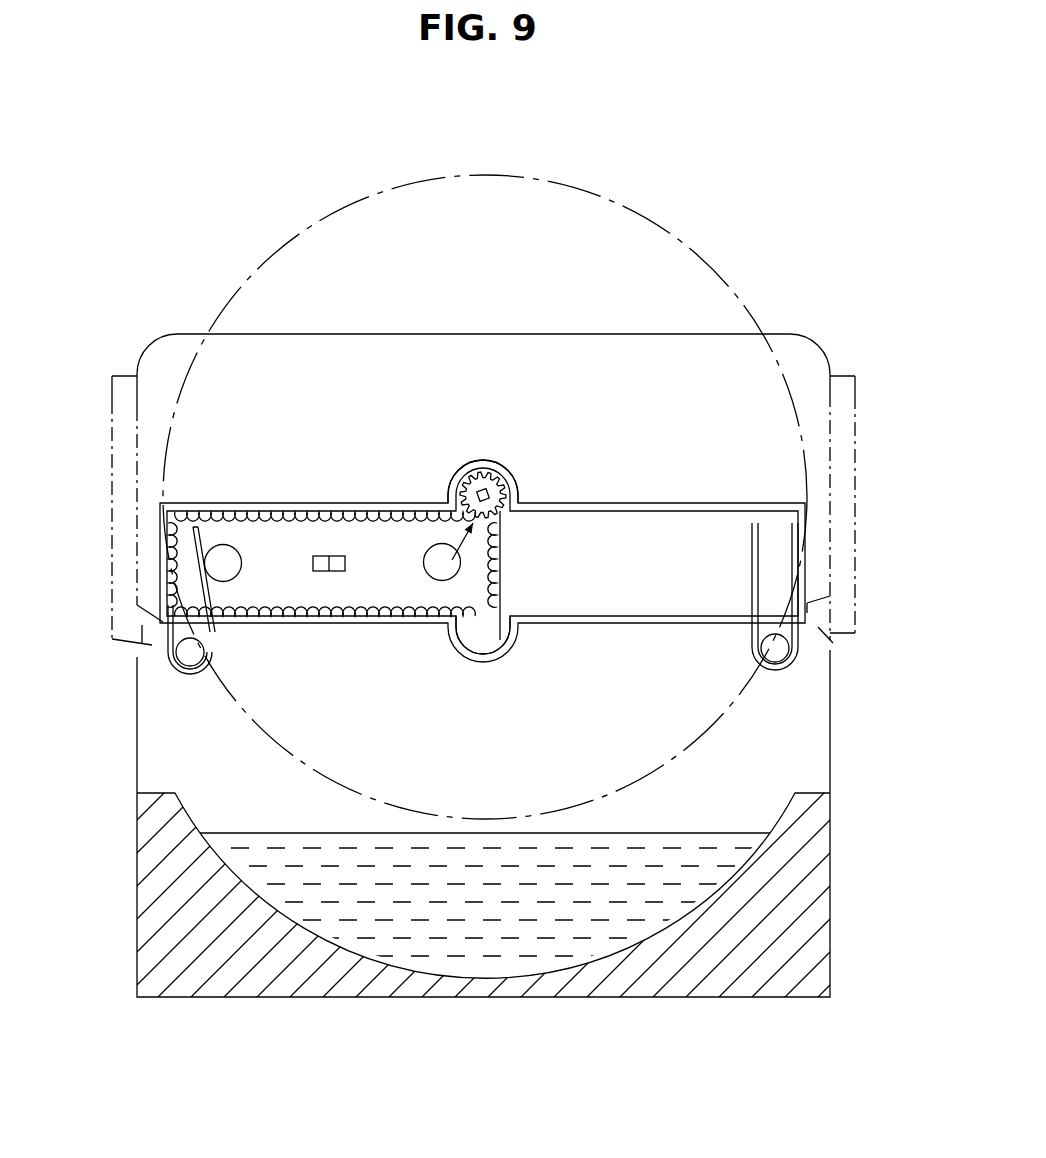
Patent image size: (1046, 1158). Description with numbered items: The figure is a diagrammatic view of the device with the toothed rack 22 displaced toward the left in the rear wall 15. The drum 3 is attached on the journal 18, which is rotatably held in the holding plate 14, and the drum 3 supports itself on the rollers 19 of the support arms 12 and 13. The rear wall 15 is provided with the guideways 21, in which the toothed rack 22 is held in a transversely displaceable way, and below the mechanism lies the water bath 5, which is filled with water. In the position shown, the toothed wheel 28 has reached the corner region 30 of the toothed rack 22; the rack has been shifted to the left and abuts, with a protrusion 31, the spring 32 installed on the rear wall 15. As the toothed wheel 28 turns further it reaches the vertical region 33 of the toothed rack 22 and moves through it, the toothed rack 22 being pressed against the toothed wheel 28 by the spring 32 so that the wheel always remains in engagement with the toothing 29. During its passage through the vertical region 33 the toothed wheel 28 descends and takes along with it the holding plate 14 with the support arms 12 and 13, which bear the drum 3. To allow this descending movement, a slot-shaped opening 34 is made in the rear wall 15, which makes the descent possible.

The drum 3 is at (615, 198).
The water bath 5 is at (370, 978).
The support arm 12 is at (835, 643).
The support arm 13 is at (147, 647).
The holding plate 14 is at (848, 433).
The rear wall 15 is at (798, 355).
The journal 18 is at (498, 463).
The roller 19 is at (180, 660).
The guideway 21 is at (648, 523).
The toothed rack 22 is at (368, 515).
The toothed wheel 28 is at (470, 462).
The toothing 29 is at (347, 612).
The corner region 30 is at (453, 560).
The protrusion 31 is at (223, 544).
The spring 32 is at (195, 675).
The vertical region 33 is at (498, 573).
The slot-shaped opening 34 is at (490, 633).